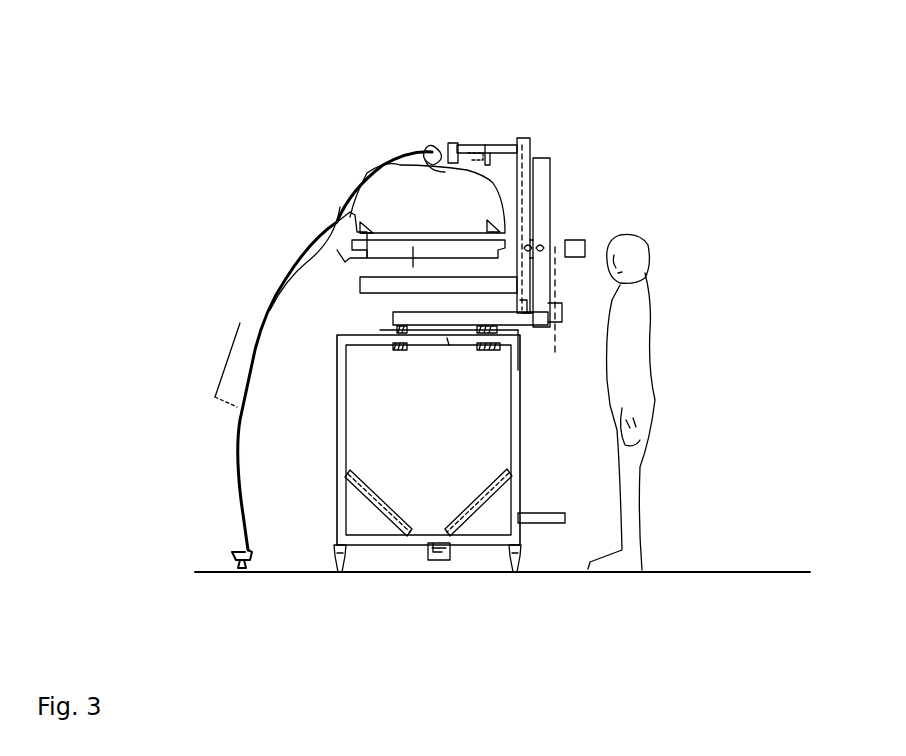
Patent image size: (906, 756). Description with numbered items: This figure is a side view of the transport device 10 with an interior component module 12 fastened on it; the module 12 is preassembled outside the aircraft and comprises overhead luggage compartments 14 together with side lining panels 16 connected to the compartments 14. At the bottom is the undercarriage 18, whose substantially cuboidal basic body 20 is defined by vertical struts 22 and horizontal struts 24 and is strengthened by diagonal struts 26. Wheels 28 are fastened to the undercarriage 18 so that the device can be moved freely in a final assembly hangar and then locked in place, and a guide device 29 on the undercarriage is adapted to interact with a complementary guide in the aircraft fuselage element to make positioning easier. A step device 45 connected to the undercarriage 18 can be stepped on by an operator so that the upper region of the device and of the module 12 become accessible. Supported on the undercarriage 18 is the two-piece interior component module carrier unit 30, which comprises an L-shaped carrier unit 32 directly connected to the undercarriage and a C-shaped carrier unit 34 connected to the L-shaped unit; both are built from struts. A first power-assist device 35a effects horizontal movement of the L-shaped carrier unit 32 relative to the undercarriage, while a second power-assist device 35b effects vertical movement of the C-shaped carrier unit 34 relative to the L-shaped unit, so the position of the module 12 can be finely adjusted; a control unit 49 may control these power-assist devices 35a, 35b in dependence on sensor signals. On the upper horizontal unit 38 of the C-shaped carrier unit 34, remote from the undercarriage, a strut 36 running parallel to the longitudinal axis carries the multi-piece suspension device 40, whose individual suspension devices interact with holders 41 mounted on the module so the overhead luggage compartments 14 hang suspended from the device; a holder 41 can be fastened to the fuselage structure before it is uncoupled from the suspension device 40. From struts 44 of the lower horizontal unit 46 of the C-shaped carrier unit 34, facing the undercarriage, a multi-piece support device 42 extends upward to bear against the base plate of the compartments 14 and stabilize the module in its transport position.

The transport device 10 is at (645, 83).
The interior component module 12 is at (236, 255).
The overhead luggage compartment 14 is at (363, 173).
The side lining panel 16 is at (235, 425).
The undercarriage 18 is at (542, 447).
The basic body 20 is at (463, 358).
The vertical strut 22 is at (337, 417).
The horizontal strut 24 is at (438, 340).
The diagonal strut 26 is at (372, 494).
The wheel 28 is at (338, 573).
The guide device 29 is at (443, 560).
The interior component module carrier unit 30 is at (583, 188).
The L-shaped carrier unit 32 is at (548, 243).
The C-shaped carrier unit 34 is at (523, 135).
The first power-assist device 35a is at (460, 342).
The second power-assist device 35b is at (585, 302).
The strut 36 is at (453, 147).
The horizontal unit 38 is at (482, 138).
The suspension device 40 is at (433, 157).
The holder 41 is at (523, 160).
The support device 42 is at (400, 268).
The strut 44 is at (385, 290).
The step device 45 is at (538, 523).
The horizontal unit 46 is at (523, 282).
The control unit 49 is at (572, 240).